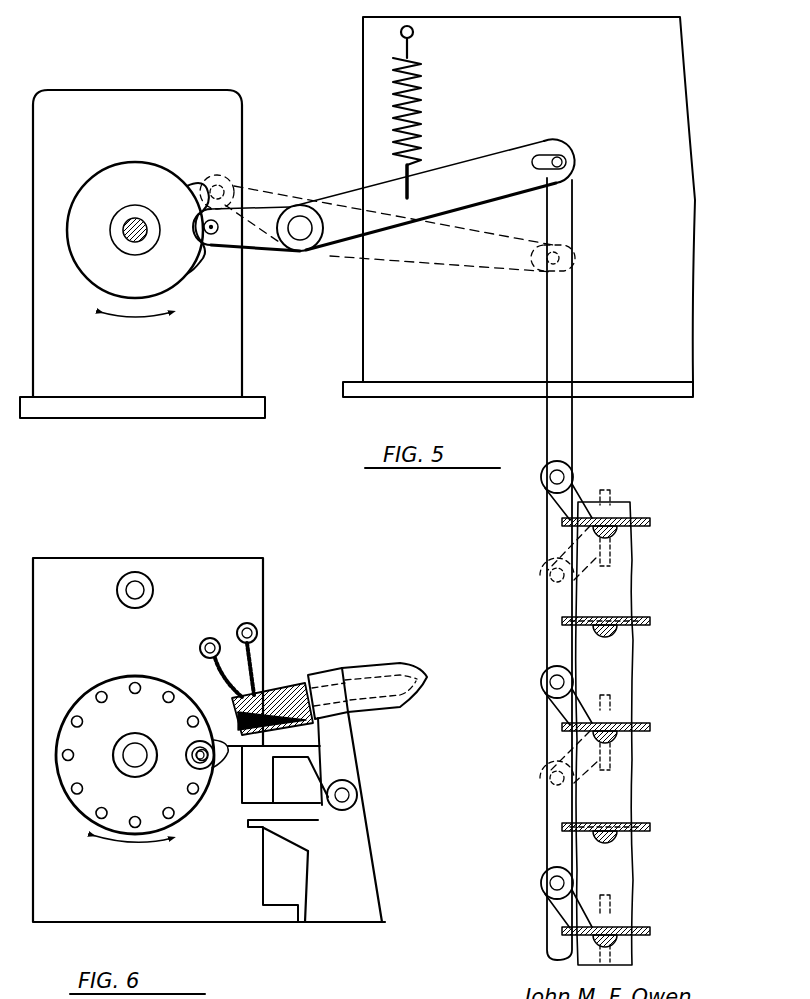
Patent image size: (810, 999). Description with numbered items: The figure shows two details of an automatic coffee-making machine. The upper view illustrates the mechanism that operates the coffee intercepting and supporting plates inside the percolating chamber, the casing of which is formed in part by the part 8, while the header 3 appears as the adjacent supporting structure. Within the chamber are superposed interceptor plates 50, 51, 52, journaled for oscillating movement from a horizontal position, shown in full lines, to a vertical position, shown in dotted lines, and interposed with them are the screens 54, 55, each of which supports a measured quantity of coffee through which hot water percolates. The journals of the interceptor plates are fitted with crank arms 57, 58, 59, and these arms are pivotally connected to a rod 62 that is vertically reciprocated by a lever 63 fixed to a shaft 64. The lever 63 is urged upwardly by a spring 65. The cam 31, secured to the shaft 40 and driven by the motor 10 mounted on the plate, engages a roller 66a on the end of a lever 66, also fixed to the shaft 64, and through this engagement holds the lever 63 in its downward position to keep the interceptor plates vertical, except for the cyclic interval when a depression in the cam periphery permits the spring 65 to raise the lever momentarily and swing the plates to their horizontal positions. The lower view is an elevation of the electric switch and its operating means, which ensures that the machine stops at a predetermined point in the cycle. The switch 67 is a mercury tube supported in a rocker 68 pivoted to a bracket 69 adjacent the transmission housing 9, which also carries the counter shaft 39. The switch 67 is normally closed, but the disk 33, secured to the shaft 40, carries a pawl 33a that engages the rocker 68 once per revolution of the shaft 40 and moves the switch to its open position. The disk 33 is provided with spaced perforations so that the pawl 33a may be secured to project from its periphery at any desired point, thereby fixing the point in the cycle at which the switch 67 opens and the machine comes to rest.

In FIG. 5, the header 3 is at (372, 37).
In FIG. 5, the percolating chamber casing part 8 is at (625, 680).
In FIG. 6, the transmission housing 9 is at (58, 568).
In FIG. 5, the motor 10 is at (65, 112).
In FIG. 5, the cam 31 is at (147, 168).
In FIG. 6, the disk 33 is at (165, 682).
In FIG. 6, the pawl 33a is at (215, 777).
In FIG. 6, the counter shaft 39 is at (133, 590).
In FIG. 5, the shaft 40 is at (137, 220).
In FIG. 6, the shaft 40 is at (137, 752).
In FIG. 5, the interceptor plate 50 is at (625, 518).
In FIG. 5, the interceptor plate 51 is at (630, 723).
In FIG. 5, the interceptor plate 52 is at (630, 927).
In FIG. 5, the screen 54 is at (630, 617).
In FIG. 5, the screen 55 is at (630, 823).
In FIG. 5, the crank arm 57 is at (545, 487).
In FIG. 5, the crank arm 58 is at (545, 692).
In FIG. 5, the crank arm 59 is at (545, 892).
In FIG. 5, the rod 62 is at (560, 437).
In FIG. 5, the lever 63 is at (352, 200).
In FIG. 5, the shaft 64 is at (300, 240).
In FIG. 5, the spring 65 is at (388, 92).
In FIG. 5, the lever 66 is at (262, 248).
In FIG. 5, the roller 66a is at (215, 250).
In FIG. 6, the switch 67 is at (383, 677).
In FIG. 6, the rocker 68 is at (330, 690).
In FIG. 6, the bracket 69 is at (355, 828).